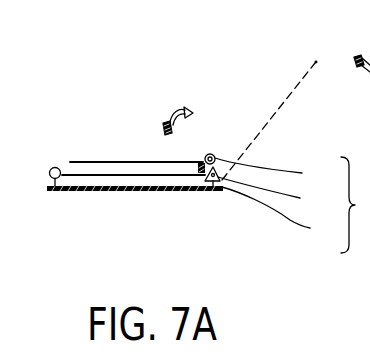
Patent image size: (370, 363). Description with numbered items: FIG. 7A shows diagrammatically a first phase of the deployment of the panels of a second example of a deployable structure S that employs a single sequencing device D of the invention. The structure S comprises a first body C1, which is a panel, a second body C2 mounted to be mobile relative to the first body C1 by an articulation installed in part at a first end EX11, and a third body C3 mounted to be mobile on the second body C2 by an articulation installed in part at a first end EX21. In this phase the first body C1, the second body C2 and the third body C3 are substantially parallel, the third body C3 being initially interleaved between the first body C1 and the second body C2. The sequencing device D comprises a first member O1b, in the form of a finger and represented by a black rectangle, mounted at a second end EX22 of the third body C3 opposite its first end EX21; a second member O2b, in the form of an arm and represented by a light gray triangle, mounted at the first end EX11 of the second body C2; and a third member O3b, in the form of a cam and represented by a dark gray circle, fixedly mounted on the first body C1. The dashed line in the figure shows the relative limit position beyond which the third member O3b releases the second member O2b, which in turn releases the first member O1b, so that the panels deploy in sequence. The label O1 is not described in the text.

The structure S is at (84, 72).
The first body C1 is at (125, 162).
The second body C2 is at (132, 194).
The third body C3 is at (82, 175).
The first end EX11 is at (200, 205).
The first end EX21 is at (59, 191).
The second end EX22 is at (197, 151).
The first object O1 is at (356, 54).
The first member O1b is at (273, 221).
The second member O2b is at (277, 194).
The third member O3b is at (276, 172).
The sequencing device D is at (355, 205).